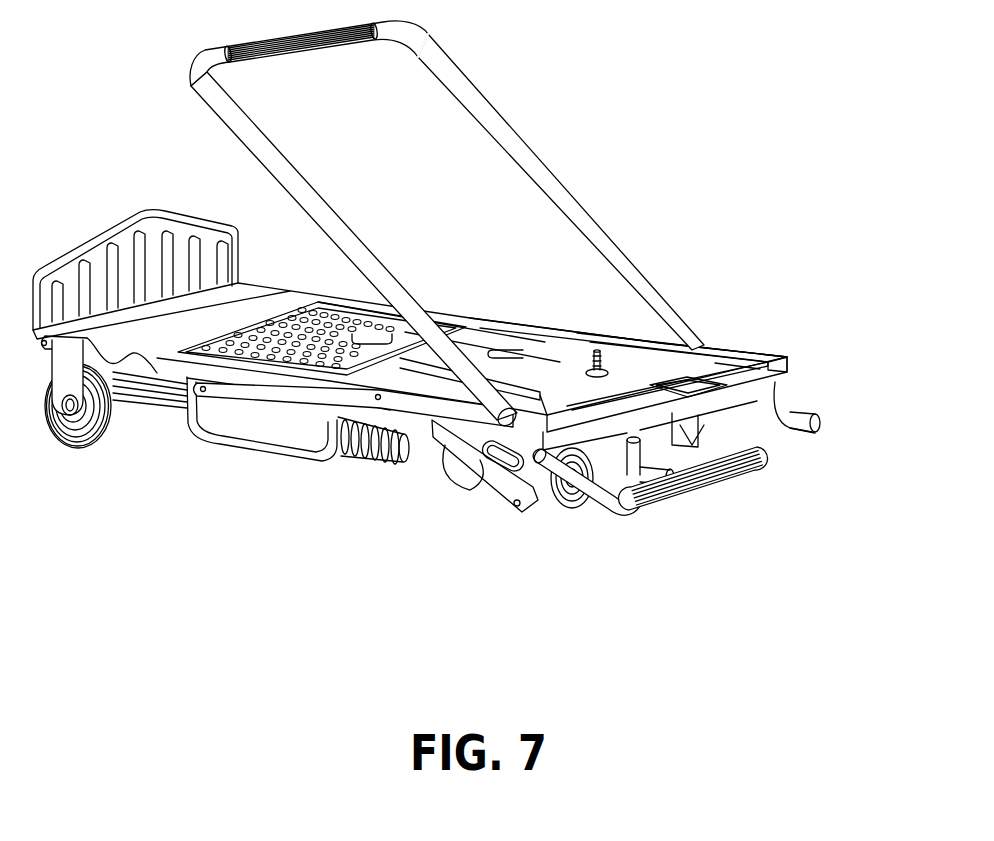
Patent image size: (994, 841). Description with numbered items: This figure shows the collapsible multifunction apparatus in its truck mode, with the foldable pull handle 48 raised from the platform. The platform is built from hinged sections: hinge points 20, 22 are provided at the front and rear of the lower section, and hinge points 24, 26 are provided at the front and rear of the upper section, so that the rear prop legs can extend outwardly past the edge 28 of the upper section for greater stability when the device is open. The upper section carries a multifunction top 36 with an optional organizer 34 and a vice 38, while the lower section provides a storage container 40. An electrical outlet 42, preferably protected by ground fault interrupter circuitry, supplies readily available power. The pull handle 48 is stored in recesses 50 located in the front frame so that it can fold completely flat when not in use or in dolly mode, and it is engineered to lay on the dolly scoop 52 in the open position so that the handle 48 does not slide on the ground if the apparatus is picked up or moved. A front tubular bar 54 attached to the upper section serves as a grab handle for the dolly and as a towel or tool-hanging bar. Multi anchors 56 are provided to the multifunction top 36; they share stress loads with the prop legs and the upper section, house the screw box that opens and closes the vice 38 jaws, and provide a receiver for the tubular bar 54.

The hinge point 20 is at (157, 367).
The hinge point 22 is at (330, 410).
The hinge point 24 is at (378, 397).
The hinge point 26 is at (517, 503).
The edge 28 is at (792, 370).
The organizer 34 is at (723, 370).
The multifunction top 36 is at (661, 367).
The vice 38 is at (743, 350).
The storage container 40 is at (273, 423).
The electrical outlet 42 is at (613, 410).
The pull handle 48 is at (527, 157).
The recess 50 is at (127, 377).
The dolly scoop 52 is at (115, 250).
The front tubular bar 54 is at (707, 470).
The multi anchor 56 is at (507, 473).